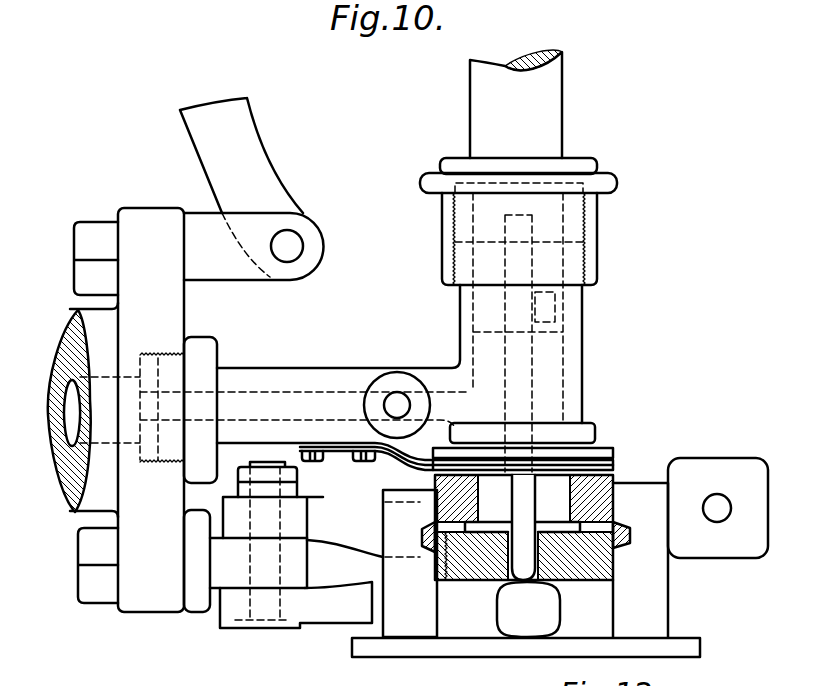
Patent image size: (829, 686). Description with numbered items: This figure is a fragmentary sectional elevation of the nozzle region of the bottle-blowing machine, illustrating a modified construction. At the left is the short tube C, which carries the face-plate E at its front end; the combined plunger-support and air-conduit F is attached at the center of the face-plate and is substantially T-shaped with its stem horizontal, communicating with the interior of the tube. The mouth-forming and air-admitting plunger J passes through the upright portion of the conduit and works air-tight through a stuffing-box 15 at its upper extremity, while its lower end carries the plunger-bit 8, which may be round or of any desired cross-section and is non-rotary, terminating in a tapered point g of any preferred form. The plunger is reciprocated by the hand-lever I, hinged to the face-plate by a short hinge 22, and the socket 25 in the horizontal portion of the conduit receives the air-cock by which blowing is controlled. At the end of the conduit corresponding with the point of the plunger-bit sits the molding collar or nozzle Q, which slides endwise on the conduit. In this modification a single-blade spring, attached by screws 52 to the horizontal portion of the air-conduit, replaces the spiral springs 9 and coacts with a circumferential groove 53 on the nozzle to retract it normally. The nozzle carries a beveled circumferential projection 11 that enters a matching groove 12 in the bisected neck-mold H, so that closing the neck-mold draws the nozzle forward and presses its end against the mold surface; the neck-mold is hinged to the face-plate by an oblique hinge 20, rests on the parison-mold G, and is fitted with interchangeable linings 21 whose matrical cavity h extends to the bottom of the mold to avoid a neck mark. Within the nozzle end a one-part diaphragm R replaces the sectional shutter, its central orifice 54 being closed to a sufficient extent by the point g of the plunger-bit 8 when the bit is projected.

The plunger-bit 8 is at (524, 527).
The springs 9 is at (428, 466).
The circumferential projection 11 is at (422, 537).
The groove 12 is at (630, 535).
The stuffing-box 15 is at (587, 233).
The hinge 20 is at (267, 625).
The interchangeable linings 21 is at (472, 633).
The short hinge 22 is at (254, 246).
The socket 25 is at (397, 398).
The screws 52 is at (364, 463).
The circumferential groove 53 is at (617, 465).
The central orifice 54 is at (541, 571).
The short tube C is at (68, 410).
The face-plate E is at (272, 410).
The combined plunger-support and air-conduit F is at (590, 369).
The bisected parison-mold G is at (526, 662).
The bisected neck-mold H is at (690, 547).
The hand-lever I is at (241, 187).
The plunger J is at (516, 104).
The nozzle Q is at (600, 449).
The one-part diaphragm R is at (460, 604).
The point of the plunger-bit g is at (522, 563).
The matrical cavity h is at (528, 609).